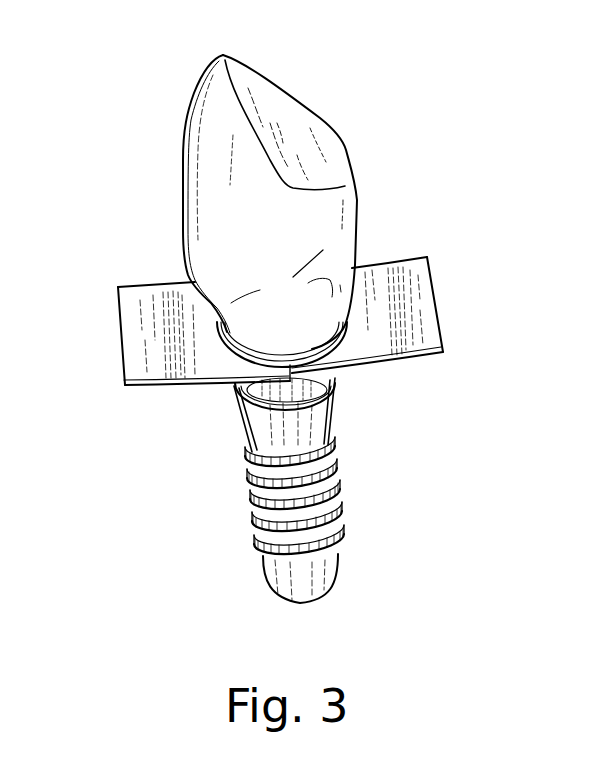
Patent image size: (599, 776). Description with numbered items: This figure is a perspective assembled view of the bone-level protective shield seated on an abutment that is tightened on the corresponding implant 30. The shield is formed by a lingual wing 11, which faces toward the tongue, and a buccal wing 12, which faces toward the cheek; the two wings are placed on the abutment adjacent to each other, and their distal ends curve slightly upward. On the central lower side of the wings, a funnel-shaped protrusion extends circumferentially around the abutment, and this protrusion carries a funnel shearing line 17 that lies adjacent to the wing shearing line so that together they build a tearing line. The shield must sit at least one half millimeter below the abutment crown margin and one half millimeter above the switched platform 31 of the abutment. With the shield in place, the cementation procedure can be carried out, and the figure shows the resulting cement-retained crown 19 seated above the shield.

The lingual wing 11 is at (425, 258).
The buccal wing 12 is at (132, 290).
The funnel shearing line 17 is at (290, 386).
The cement-retained crown 19 is at (303, 167).
The implant 30 is at (333, 453).
The switched platform 31 is at (268, 429).